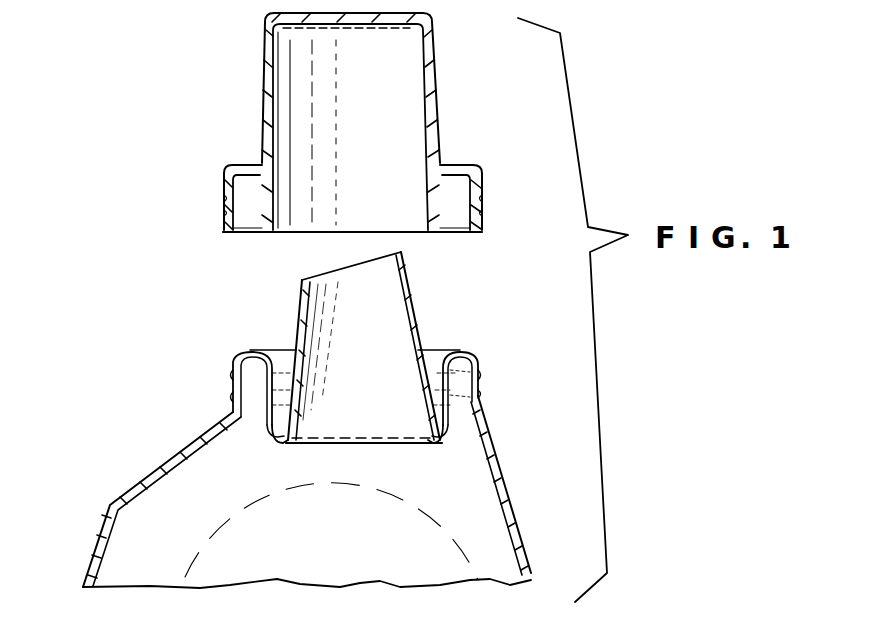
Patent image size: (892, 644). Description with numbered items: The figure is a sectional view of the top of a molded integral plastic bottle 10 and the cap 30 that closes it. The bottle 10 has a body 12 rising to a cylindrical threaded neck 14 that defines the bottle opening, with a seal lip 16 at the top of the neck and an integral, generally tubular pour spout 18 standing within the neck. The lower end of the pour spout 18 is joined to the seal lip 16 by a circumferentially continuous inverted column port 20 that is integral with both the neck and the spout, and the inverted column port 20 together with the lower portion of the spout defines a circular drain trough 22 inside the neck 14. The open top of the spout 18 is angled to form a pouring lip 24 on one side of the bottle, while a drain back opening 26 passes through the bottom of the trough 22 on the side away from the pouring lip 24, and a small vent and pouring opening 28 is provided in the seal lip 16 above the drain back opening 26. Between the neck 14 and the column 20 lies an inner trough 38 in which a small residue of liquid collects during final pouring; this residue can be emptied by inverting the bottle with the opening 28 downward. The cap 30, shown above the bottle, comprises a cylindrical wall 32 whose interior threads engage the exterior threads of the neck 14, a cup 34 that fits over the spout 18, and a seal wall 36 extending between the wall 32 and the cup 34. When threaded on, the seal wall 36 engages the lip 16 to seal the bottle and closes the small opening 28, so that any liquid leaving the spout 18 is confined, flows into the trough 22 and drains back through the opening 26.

The bottle 10 is at (140, 424).
The body 12 is at (516, 503).
The cylindrical threaded neck 14 is at (480, 386).
The seal lip 16 is at (465, 352).
The pour spout 18 is at (302, 310).
The inverted column port 20 is at (245, 437).
The drain trough 22 is at (442, 441).
The pouring lip 24 is at (403, 253).
The drain back opening 26 is at (277, 441).
The vent and pouring opening 28 is at (247, 350).
The cap 30 is at (190, 88).
The cylindrical wall 32 is at (483, 192).
The cup 34 is at (436, 74).
The seal wall 36 is at (448, 165).
The inner trough 38 is at (455, 398).